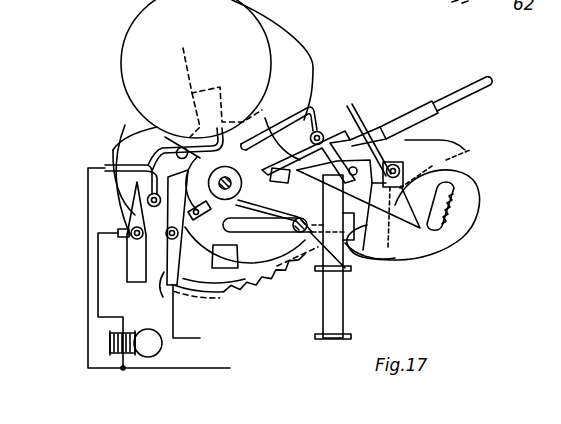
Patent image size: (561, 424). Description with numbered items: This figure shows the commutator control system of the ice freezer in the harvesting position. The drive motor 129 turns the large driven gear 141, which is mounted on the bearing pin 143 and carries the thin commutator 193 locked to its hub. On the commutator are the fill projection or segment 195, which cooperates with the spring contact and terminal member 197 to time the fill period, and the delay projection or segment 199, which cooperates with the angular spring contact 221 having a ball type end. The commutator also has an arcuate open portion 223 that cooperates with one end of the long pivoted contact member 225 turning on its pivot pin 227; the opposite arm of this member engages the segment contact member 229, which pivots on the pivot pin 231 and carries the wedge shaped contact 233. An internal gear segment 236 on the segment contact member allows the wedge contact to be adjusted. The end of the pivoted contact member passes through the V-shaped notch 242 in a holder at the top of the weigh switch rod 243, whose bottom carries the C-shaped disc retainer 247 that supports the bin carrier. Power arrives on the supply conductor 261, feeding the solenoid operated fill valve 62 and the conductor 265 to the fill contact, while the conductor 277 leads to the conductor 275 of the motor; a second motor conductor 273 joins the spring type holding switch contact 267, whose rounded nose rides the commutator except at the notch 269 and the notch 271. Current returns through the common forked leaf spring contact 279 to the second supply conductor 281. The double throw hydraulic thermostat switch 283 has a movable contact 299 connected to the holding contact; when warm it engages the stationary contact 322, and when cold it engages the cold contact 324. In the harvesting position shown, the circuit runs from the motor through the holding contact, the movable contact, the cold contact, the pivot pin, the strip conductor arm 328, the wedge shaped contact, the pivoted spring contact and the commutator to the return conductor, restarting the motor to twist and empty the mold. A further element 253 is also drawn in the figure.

The solenoid operated fill valve 62 is at (157, 350).
The drive motor 129 is at (248, 33).
The large driven gear 141 is at (242, 287).
The bearing pin 143 is at (283, 136).
The commutator 193 is at (220, 223).
The fill projection or segment 195 is at (196, 69).
The spring contact and terminal member 197 is at (127, 262).
The delay projection or segment 199 is at (244, 290).
The angular spring contact 221 is at (435, 169).
The arcuate shaped open portion 223 is at (267, 209).
The pivoted contact member 225 is at (233, 234).
The pivot pin 227 is at (306, 253).
The segment contact member 229 is at (468, 226).
The pivot pin 231 is at (451, 138).
The wedge shaped contact 233 is at (420, 258).
The internal gear segment 236 is at (455, 201).
The V-shaped notch 242 is at (350, 268).
The weigh switch rod 243 is at (320, 315).
The C-shaped disc retainer 247 is at (320, 336).
The spring arm 253 is at (350, 272).
The supply conductor 261 is at (200, 368).
The conductor 265 is at (123, 317).
The spring type holding switch contact 267 is at (320, 122).
The notch 269 is at (358, 205).
The notch 271 is at (186, 251).
The conductor 273 is at (282, 109).
The conductor 275 is at (131, 137).
The conductor 277 is at (88, 168).
The common forked leaf spring contact 279 is at (158, 283).
The second supply conductor 281 is at (190, 338).
The double throw hydraulic thermostat switch 283 is at (447, 114).
The movable contact 299 is at (368, 124).
The stationary contact 322 is at (364, 134).
The cold contact 324 is at (408, 142).
The arm 328 is at (450, 166).